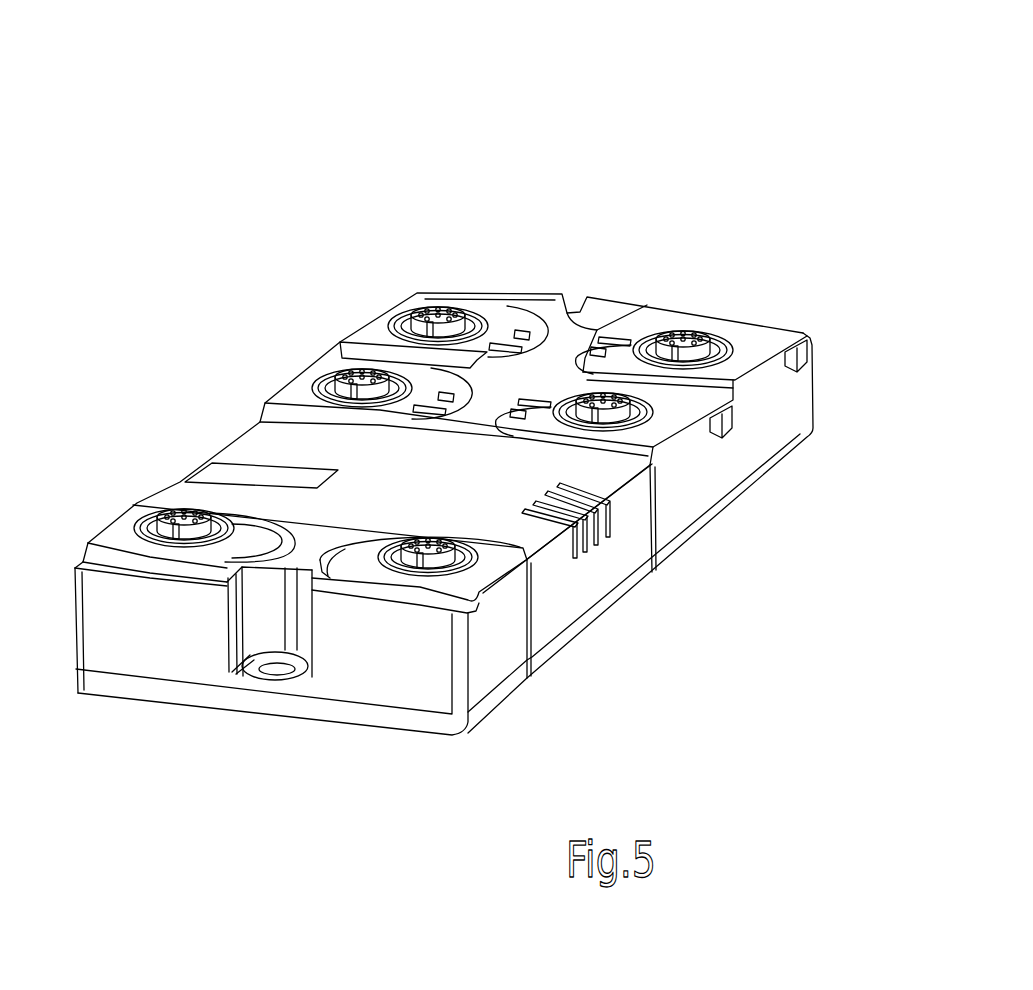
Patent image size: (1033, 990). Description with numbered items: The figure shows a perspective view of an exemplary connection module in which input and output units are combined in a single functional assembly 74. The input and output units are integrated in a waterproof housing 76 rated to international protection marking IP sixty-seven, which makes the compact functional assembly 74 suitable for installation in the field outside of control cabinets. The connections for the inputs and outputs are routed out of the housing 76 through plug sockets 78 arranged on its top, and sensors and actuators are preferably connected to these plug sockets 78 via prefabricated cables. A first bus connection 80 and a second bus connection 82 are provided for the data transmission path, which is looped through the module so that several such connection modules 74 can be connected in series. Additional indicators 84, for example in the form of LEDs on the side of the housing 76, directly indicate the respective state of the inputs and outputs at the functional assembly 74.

The functional assembly 74 is at (529, 240).
The waterproof housing 76 is at (390, 667).
The plug sockets 78 is at (407, 312).
The first bus connection 80 is at (173, 513).
The second bus connection 82 is at (470, 537).
The indicators 84 is at (597, 537).